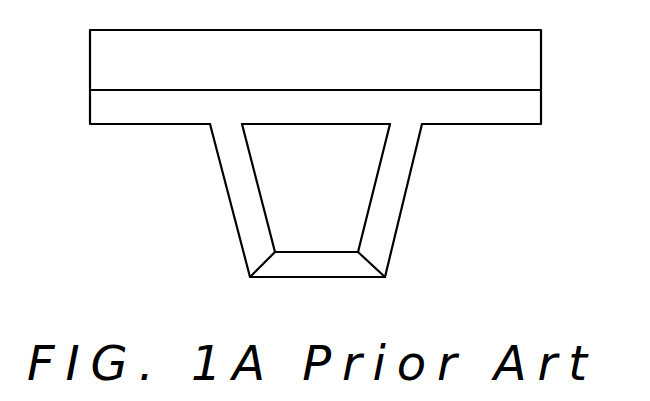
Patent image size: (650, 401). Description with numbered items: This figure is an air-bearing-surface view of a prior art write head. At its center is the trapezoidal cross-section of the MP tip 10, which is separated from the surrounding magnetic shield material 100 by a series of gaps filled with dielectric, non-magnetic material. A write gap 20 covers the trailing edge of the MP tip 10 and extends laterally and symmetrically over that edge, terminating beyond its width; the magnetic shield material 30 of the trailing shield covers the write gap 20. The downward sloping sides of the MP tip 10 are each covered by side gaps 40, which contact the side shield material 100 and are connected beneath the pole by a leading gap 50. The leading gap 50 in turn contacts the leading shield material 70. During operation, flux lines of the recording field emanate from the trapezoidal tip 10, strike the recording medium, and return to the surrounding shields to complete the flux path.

The magnetic shield material 100 is at (447, 221).
The magnetic shield material of the trailing shield 30 is at (521, 64).
The write gap 20 is at (521, 106).
The side gaps 40 is at (248, 207).
The MP tip 10 is at (363, 176).
The leading gap 50 is at (363, 263).
The leading shield material 70 is at (278, 277).